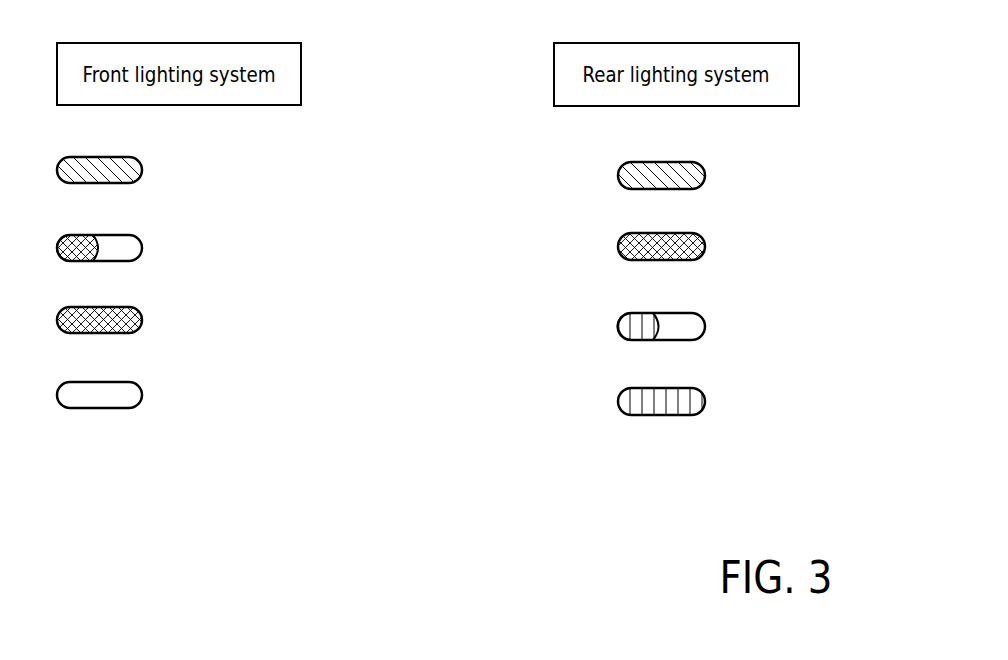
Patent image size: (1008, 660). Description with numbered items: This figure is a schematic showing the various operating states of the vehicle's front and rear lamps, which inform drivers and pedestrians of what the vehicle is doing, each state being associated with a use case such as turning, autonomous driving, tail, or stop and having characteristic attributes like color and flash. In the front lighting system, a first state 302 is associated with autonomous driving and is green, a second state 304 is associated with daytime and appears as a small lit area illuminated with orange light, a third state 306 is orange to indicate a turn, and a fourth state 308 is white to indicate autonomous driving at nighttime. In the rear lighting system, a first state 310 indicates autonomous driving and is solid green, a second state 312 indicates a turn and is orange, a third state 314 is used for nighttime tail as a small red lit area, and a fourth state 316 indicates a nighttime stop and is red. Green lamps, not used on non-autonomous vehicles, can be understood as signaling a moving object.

The first state 302 is at (142, 163).
The second state 304 is at (142, 241).
The third state 306 is at (142, 313).
The fourth state 308 is at (142, 388).
The first state 310 is at (705, 168).
The second state 312 is at (705, 239).
The third state 314 is at (705, 319).
The fourth state 316 is at (705, 394).